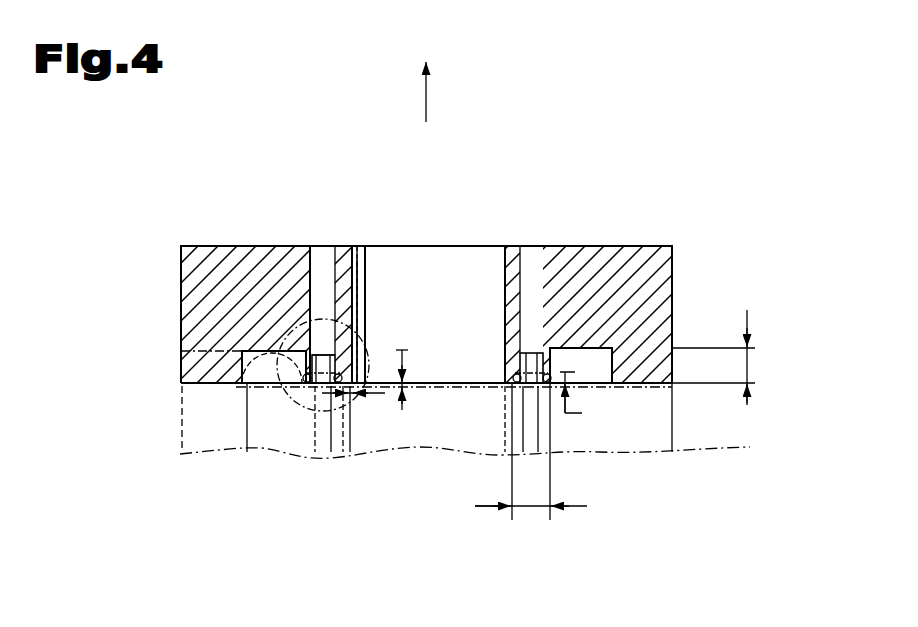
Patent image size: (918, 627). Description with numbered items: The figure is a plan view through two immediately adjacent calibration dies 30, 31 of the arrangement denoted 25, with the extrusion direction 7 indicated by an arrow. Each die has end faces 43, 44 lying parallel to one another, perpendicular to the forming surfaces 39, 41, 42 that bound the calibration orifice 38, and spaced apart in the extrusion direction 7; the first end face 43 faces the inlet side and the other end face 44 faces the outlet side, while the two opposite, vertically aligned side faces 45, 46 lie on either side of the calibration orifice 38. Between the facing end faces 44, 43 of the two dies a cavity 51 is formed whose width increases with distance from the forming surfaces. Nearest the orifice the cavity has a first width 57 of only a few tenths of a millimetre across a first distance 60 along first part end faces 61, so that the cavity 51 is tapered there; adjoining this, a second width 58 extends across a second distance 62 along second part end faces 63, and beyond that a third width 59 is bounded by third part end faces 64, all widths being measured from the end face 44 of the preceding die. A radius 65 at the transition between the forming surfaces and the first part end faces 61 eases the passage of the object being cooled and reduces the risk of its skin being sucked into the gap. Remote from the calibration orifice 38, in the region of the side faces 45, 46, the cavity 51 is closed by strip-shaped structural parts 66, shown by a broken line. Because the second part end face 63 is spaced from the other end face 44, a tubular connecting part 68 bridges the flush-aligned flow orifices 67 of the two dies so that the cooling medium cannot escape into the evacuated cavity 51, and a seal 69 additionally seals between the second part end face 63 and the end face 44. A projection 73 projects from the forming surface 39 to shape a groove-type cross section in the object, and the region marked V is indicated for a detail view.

The extrusion direction 7 is at (432, 102).
The sealing device 25 is at (648, 134).
The calibration die 30 is at (568, 414).
The calibration die 31 is at (674, 272).
The calibration orifice 38 is at (490, 245).
The forming surface 39 is at (354, 310).
The forming surface 41 is at (427, 379).
The forming surface 42 is at (398, 306).
The first end face 43 is at (200, 383).
The second end face 44 is at (204, 246).
The side face 45 is at (180, 296).
The side face 46 is at (676, 305).
The cavity 51 is at (268, 387).
The first width 57 is at (454, 352).
The second width 58 is at (568, 414).
The third width 59 is at (751, 367).
The first distance 60 is at (370, 386).
The first part end face 61 is at (343, 386).
The second distance 62 is at (579, 509).
The second part end face 63 is at (530, 453).
The third part end face 64 is at (247, 452).
The radius 65 is at (505, 384).
The strip-shaped structural part 66 is at (200, 359).
The flow orifice 67 is at (328, 290).
The connecting part 68 is at (315, 350).
The seal 69 is at (548, 388).
The projection 73 is at (360, 294).
The detail V is at (331, 386).